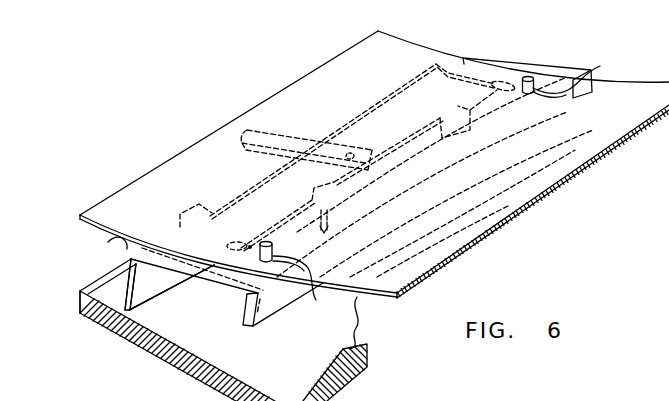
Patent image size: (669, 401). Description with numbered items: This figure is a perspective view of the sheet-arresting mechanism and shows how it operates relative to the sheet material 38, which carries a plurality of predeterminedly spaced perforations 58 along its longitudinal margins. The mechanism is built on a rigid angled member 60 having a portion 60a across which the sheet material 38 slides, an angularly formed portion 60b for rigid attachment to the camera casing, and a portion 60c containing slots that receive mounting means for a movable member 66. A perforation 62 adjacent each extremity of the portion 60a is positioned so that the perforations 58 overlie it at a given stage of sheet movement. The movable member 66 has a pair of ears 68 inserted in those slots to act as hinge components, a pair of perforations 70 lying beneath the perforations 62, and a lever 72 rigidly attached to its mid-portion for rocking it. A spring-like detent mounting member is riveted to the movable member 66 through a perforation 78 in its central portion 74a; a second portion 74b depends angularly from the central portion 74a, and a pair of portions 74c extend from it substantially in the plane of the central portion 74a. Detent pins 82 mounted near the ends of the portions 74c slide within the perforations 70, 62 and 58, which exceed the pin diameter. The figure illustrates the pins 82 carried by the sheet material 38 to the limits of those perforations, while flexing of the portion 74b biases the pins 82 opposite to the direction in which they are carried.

The sheet material 38 is at (481, 221).
The perforations 58 is at (316, 300).
The rigid angled member 60 is at (246, 326).
The portion 60a is at (158, 272).
The portion 60b is at (97, 300).
The portion 60c is at (124, 290).
The perforation 62 is at (243, 240).
The movable member 66 is at (223, 272).
The ears 68 is at (108, 242).
The perforations 70 is at (238, 243).
The lever 72 is at (271, 128).
The central portion 74a is at (372, 152).
The second portion 74b is at (416, 152).
The portions 74c is at (488, 105).
The perforation 78 is at (350, 152).
The detent pins 82 is at (266, 242).